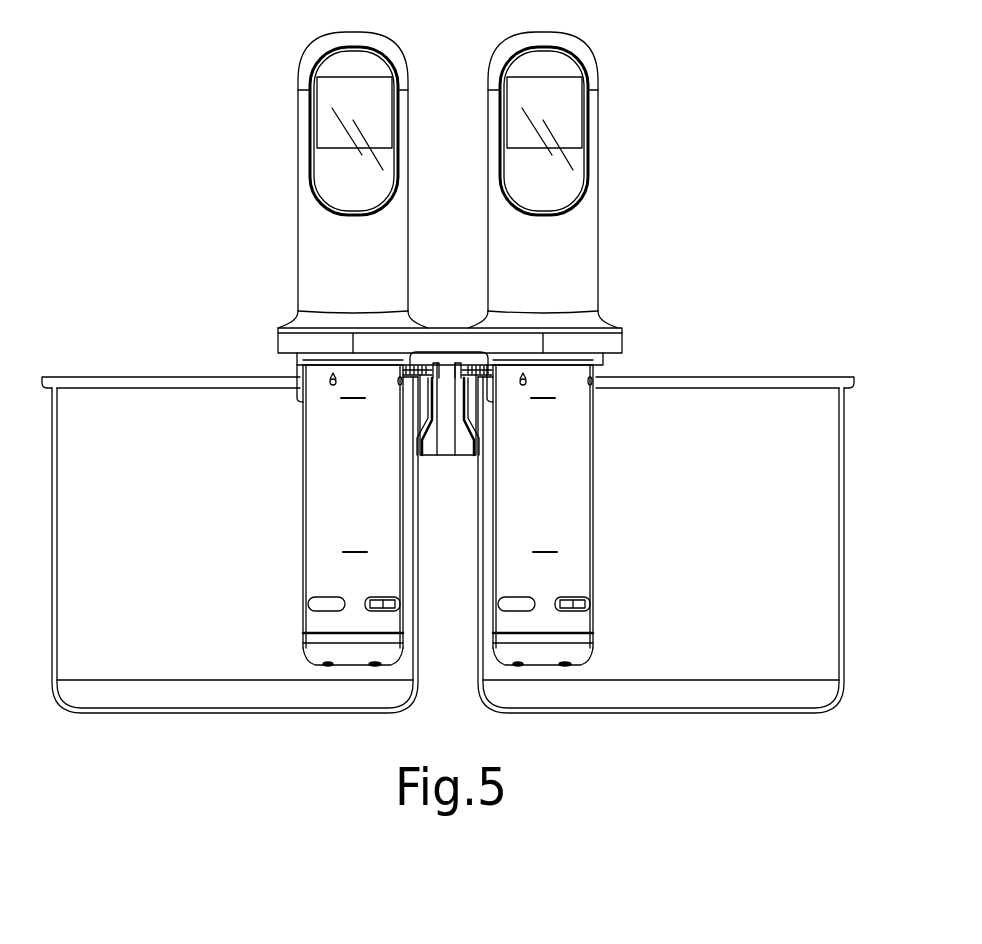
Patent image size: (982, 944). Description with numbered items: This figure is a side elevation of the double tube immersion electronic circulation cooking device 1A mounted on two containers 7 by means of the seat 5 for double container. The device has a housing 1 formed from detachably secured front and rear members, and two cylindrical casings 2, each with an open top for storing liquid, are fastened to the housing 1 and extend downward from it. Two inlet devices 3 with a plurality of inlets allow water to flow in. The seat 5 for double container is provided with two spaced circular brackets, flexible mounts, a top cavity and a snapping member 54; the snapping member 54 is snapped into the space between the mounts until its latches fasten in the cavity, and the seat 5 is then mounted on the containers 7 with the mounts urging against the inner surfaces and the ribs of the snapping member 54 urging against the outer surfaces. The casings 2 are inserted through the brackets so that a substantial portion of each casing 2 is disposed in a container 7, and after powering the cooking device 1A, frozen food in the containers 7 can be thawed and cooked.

The double tube immersion electronic circulation cooking device 1A is at (281, 221).
The housing 1 is at (571, 260).
The cylindrical casing 2 is at (572, 465).
The inlet device 3 is at (577, 648).
The seat for double container 5 is at (421, 372).
The snapping member 54 is at (452, 440).
The container 7 is at (135, 393).